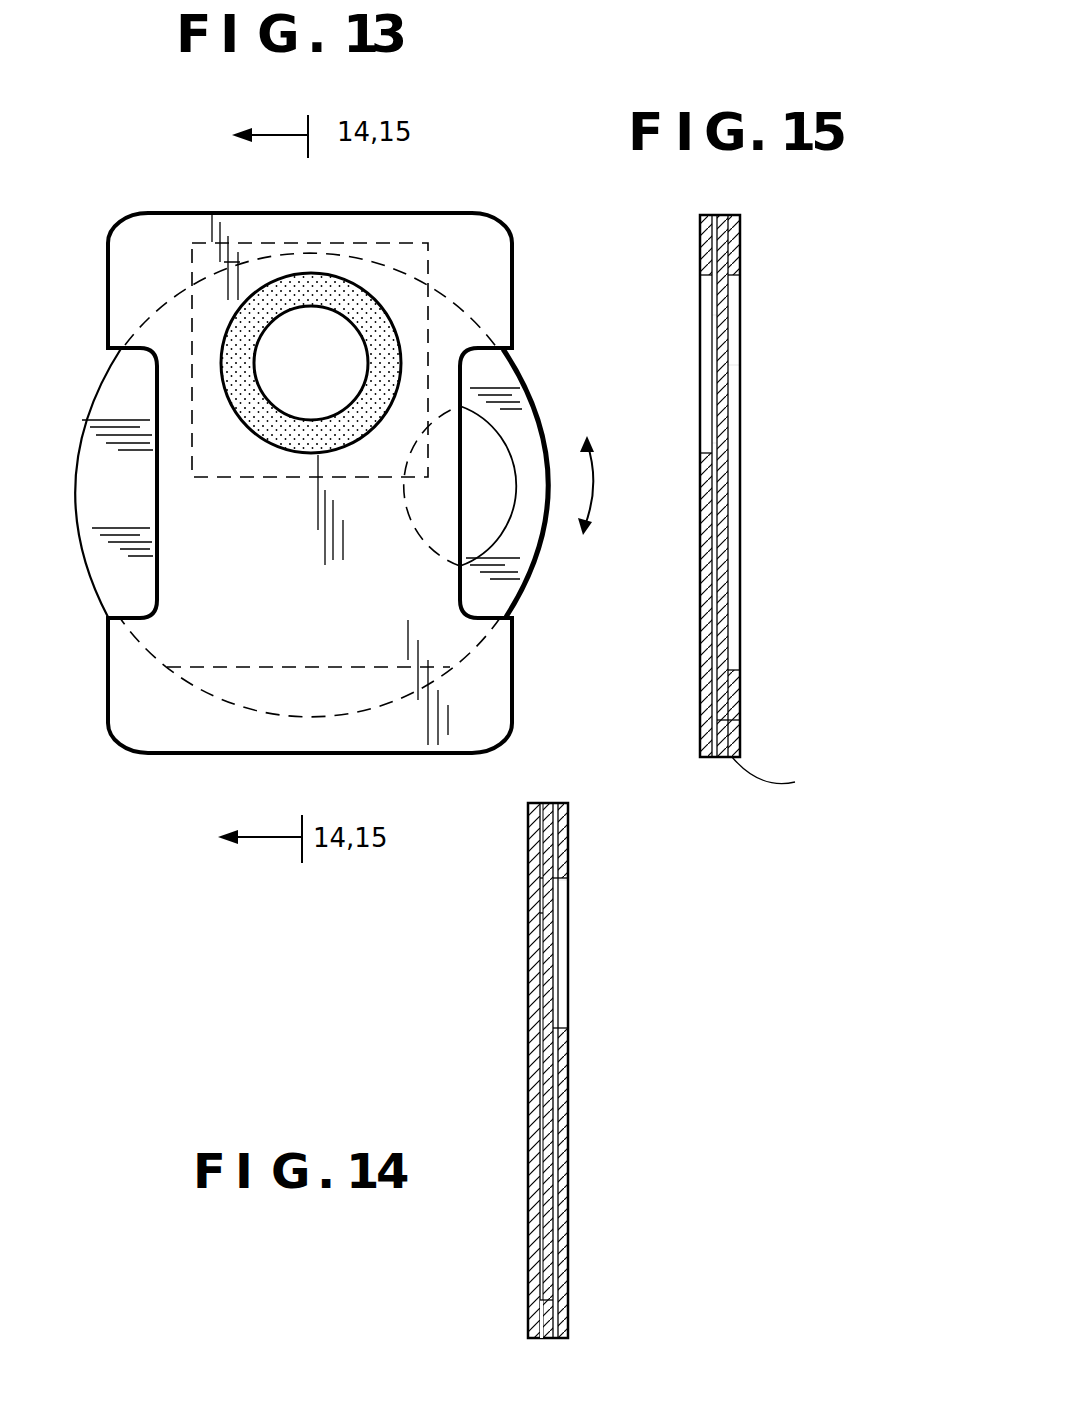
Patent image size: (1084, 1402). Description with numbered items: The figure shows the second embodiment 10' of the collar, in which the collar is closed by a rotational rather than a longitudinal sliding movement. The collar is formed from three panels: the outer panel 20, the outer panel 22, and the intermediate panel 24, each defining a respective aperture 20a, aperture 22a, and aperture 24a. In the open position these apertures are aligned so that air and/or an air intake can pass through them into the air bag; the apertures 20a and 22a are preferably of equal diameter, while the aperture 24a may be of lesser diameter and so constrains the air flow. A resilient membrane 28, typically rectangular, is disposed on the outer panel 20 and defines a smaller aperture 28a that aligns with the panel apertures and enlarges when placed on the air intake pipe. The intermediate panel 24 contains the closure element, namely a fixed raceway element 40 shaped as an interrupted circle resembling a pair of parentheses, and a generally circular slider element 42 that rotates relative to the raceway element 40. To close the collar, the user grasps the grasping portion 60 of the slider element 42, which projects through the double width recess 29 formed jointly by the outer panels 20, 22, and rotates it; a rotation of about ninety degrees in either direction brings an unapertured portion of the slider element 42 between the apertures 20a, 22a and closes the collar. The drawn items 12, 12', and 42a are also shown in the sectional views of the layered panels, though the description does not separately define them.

In FIG. 13, the second embodiment 10' is at (311, 478).
In FIG. 14, the second embodiment 10' is at (548, 1042).
In FIG. 15, the second embodiment 10' is at (718, 518).
In FIG. 15, the release layer 12 is at (779, 227).
In FIG. 14, the release layer 12' is at (597, 832).
In FIG. 13, the outer panel 20 is at (127, 707).
In FIG. 14, the outer panel 20 is at (528, 830).
In FIG. 15, the outer panel 20 is at (700, 238).
In FIG. 13, the aperture 20a is at (370, 297).
In FIG. 14, the aperture 20a is at (537, 880).
In FIG. 15, the aperture 20a is at (703, 443).
In FIG. 14, the outer panel 22 is at (567, 1347).
In FIG. 14, the aperture 22a is at (568, 972).
In FIG. 15, the aperture 22a is at (735, 365).
In FIG. 14, the intermediate panel 24 is at (550, 1338).
In FIG. 15, the intermediate panel 24 is at (715, 757).
In FIG. 13, the aperture 24a is at (488, 455).
In FIG. 14, the aperture 24a is at (553, 990).
In FIG. 13, the resilient membrane 28 is at (192, 278).
In FIG. 14, the resilient membrane 28 is at (541, 883).
In FIG. 15, the resilient membrane 28 is at (712, 258).
In FIG. 13, the aperture 28a is at (346, 377).
In FIG. 14, the aperture 28a is at (537, 913).
In FIG. 15, the aperture 28a is at (712, 315).
In FIG. 13, the recess 29 is at (133, 537).
In FIG. 14, the raceway element 40 is at (543, 1315).
In FIG. 15, the raceway element 40 is at (728, 735).
In FIG. 13, the slider element 42 is at (523, 575).
In FIG. 14, the slider element 42 is at (550, 1118).
In FIG. 15, the slider element 42 is at (725, 597).
In FIG. 13, the hidden flap edge 42a is at (265, 668).
In FIG. 15, the hidden flap edge 42a is at (725, 687).
In FIG. 13, the grasping portion 60 is at (133, 410).